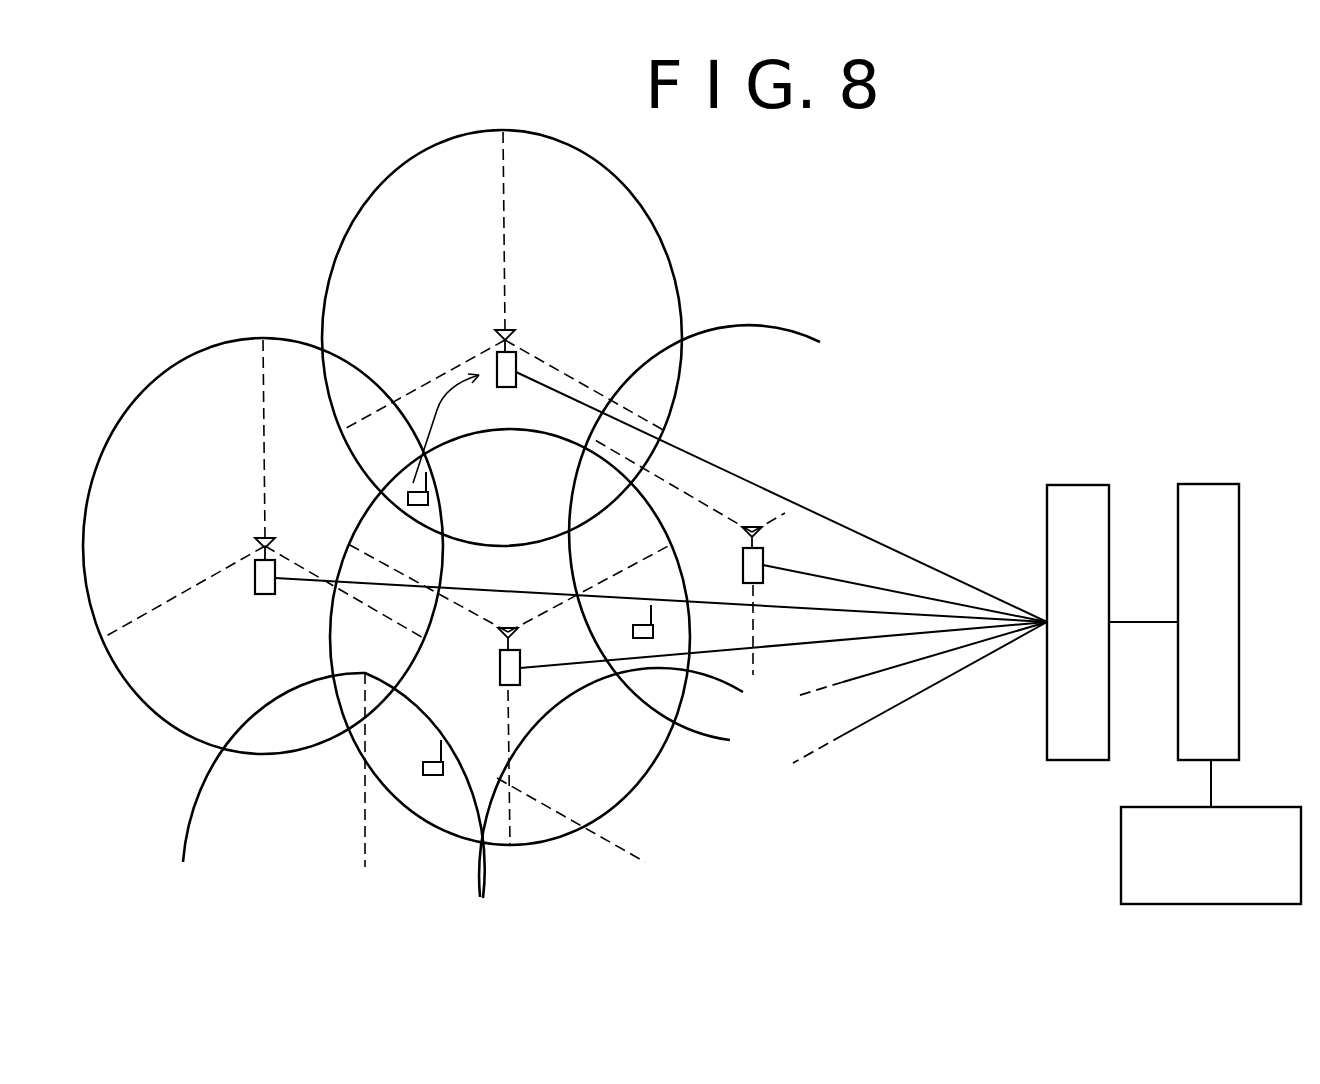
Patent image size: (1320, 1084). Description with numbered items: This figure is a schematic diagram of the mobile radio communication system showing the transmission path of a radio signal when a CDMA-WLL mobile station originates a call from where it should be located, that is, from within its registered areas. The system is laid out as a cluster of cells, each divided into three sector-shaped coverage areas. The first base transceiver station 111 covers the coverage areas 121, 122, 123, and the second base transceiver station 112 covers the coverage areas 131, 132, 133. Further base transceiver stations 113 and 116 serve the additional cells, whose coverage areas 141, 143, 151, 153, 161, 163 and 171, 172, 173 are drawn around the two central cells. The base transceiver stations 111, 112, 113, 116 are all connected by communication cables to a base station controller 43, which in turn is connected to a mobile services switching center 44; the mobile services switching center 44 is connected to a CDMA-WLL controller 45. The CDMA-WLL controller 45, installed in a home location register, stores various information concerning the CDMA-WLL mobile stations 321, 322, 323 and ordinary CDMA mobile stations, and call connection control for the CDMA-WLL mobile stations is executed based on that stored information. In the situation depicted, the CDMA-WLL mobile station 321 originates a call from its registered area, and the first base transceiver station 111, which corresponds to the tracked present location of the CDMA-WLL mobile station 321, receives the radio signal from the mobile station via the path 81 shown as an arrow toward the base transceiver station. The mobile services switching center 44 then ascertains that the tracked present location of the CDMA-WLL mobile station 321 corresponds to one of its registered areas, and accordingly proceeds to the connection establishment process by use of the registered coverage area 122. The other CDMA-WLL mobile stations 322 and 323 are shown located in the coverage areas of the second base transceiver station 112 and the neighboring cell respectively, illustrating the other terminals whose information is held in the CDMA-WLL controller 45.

The path 81 is at (433, 399).
The first base transceiver station 111 is at (520, 354).
The second base transceiver station 112 is at (520, 678).
The base transceiver station 113 is at (764, 556).
The base transceiver station 116 is at (256, 562).
The coverage area 121 is at (502, 338).
The coverage area 122 is at (506, 469).
The coverage area 123 is at (423, 349).
The coverage area 131 is at (510, 637).
The coverage area 132 is at (428, 615).
The coverage area 133 is at (520, 509).
The coverage area 141 is at (694, 532).
The coverage area 143 is at (673, 502).
The coverage area 151 is at (611, 782).
The coverage area 153 is at (571, 831).
The coverage area 161 is at (334, 785).
The coverage area 163 is at (290, 812).
The coverage area 171 is at (263, 546).
The coverage area 172 is at (234, 687).
The coverage area 173 is at (183, 554).
The CDMA-WLL mobile station 321 is at (428, 498).
The CDMA-WLL mobile station 322 is at (426, 760).
The CDMA-WLL mobile station 323 is at (653, 631).
The base station controller 43 is at (1080, 481).
The mobile services switching center 44 is at (1204, 480).
The CDMA-WLL controller 45 is at (1232, 804).